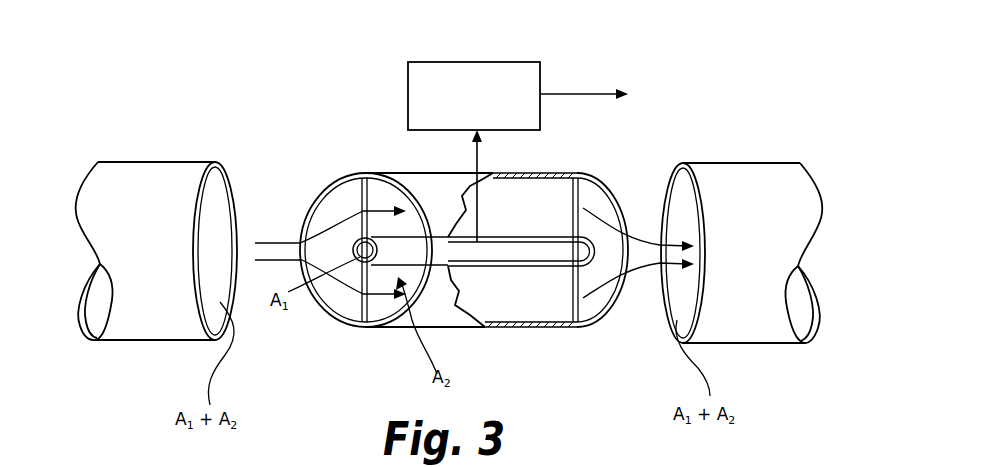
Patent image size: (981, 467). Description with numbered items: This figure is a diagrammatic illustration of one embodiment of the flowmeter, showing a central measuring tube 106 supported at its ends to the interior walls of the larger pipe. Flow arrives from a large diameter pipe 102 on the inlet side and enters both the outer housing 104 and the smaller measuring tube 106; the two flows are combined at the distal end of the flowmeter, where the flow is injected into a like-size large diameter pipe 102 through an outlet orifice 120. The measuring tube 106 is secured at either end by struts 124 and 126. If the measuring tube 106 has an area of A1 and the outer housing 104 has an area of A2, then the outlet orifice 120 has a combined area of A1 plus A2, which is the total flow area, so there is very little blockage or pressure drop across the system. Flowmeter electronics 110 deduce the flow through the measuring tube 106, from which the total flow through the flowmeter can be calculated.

The large diameter pipe 102 is at (150, 167).
The outlet orifice 120 is at (210, 230).
The outer housing 104 is at (558, 328).
The strut 124 is at (363, 196).
The measuring tube 106 is at (490, 236).
The strut 126 is at (364, 306).
The flowmeter electronics 110 is at (512, 62).